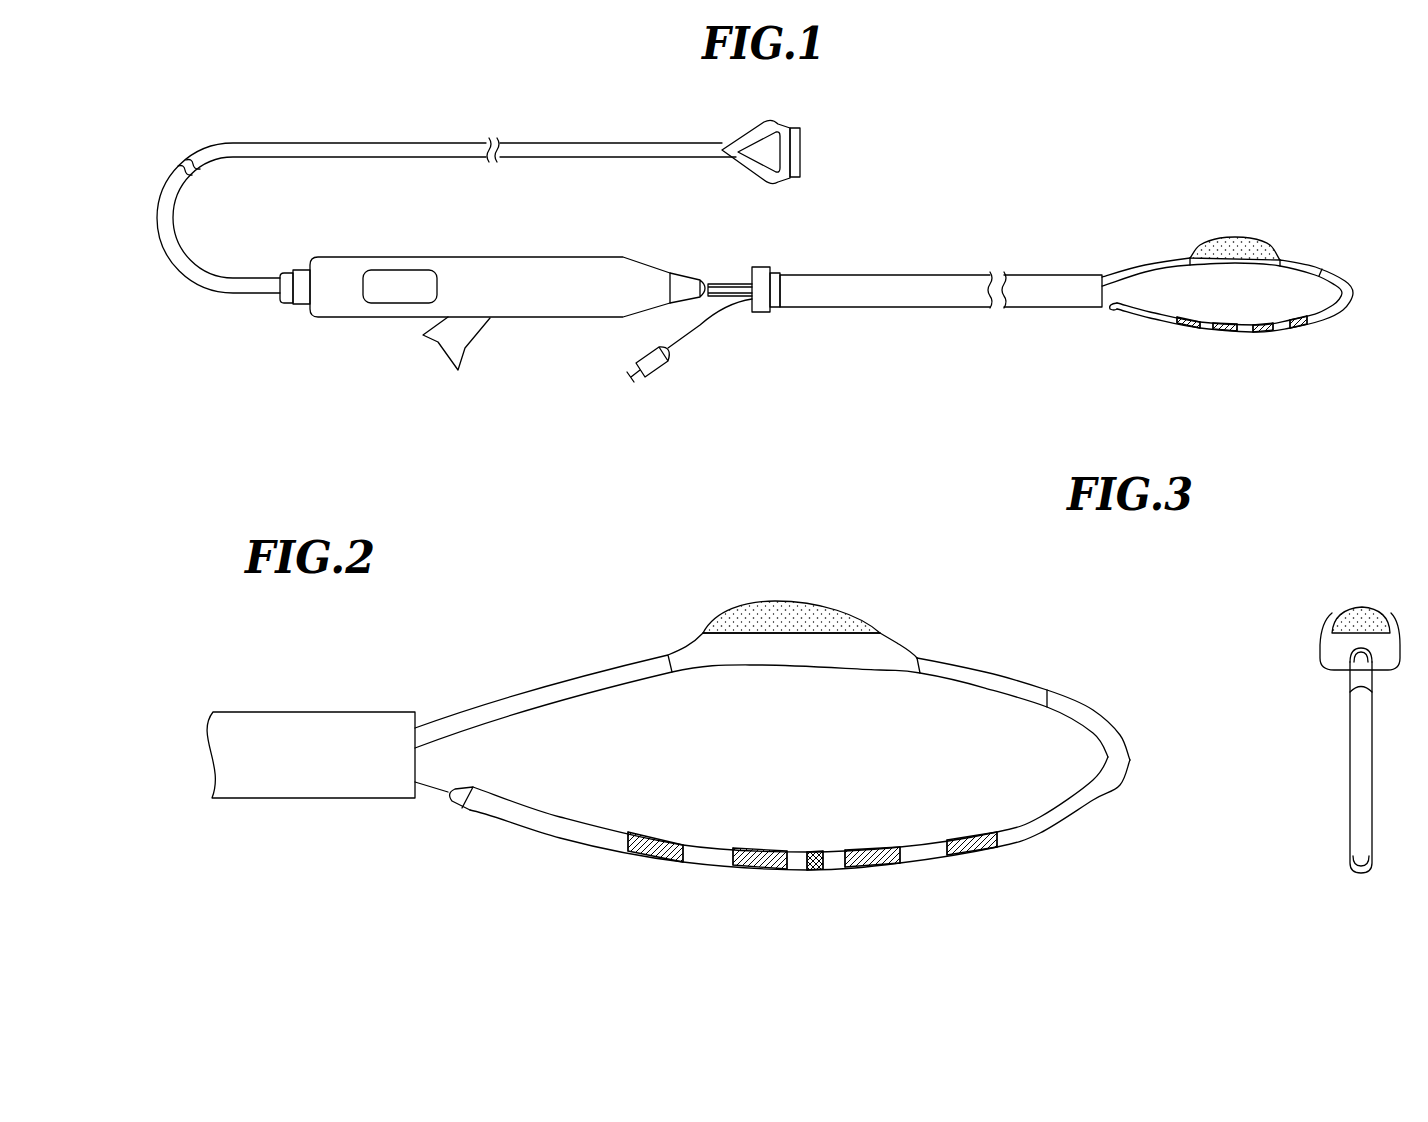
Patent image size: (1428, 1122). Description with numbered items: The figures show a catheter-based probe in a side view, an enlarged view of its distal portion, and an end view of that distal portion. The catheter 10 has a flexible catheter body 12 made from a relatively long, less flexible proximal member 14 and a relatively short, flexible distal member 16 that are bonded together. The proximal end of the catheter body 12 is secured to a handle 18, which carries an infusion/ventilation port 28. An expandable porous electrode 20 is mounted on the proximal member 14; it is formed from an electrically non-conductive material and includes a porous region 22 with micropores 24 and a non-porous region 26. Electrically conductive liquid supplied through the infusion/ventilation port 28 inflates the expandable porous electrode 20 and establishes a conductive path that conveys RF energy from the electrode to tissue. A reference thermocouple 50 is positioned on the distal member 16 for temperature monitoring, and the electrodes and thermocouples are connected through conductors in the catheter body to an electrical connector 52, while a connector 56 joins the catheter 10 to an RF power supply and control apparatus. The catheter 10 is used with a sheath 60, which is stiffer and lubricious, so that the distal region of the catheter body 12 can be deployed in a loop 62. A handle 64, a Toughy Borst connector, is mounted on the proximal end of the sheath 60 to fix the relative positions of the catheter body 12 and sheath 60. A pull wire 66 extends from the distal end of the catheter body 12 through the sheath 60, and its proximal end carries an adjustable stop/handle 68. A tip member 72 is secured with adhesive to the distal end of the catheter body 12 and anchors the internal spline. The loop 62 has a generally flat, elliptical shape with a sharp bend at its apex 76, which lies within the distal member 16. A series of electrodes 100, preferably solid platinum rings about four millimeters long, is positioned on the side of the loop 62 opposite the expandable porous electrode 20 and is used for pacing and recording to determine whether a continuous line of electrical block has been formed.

In FIG. 1, the catheter 10 is at (630, 242).
In FIG. 1, the catheter body 12 is at (715, 268).
In FIG. 2, the catheter body 12 is at (527, 670).
In FIG. 1, the proximal member 14 is at (738, 278).
In FIG. 2, the proximal member 14 is at (987, 667).
In FIG. 3, the proximal member 14 is at (1353, 680).
In FIG. 1, the distal member 16 is at (1323, 320).
In FIG. 2, the distal member 16 is at (1067, 702).
In FIG. 3, the distal member 16 is at (1353, 847).
In FIG. 1, the handle 18 is at (480, 257).
In FIG. 1, the expandable porous electrode 20 is at (1212, 234).
In FIG. 2, the expandable porous electrode 20 is at (900, 644).
In FIG. 3, the expandable porous electrode 20 is at (1343, 556).
In FIG. 2, the porous region 22 is at (814, 600).
In FIG. 3, the porous region 22 is at (1350, 609).
In FIG. 2, the micropores 24 is at (740, 618).
In FIG. 3, the micropores 24 is at (1338, 627).
In FIG. 2, the non-porous region 26 is at (848, 650).
In FIG. 3, the non-porous region 26 is at (1323, 668).
In FIG. 1, the infusion/ventilation port 28 is at (445, 358).
In FIG. 2, the reference thermocouple 50 is at (811, 868).
In FIG. 1, the electrical connector 52 is at (288, 302).
In FIG. 1, the connector 56 is at (783, 122).
In FIG. 1, the sheath 60 is at (910, 307).
In FIG. 2, the sheath 60 is at (333, 710).
In FIG. 1, the loop 62 is at (1228, 343).
In FIG. 2, the loop 62 is at (513, 850).
In FIG. 1, the handle 64 is at (762, 315).
In FIG. 1, the pull wire 66 is at (690, 333).
In FIG. 2, the pull wire 66 is at (437, 788).
In FIG. 1, the adjustable stop/handle 68 is at (660, 372).
In FIG. 2, the tip member 72 is at (460, 808).
In FIG. 1, the apex 76 is at (1357, 292).
In FIG. 2, the apex 76 is at (1133, 762).
In FIG. 2, the electrodes 100 is at (877, 868).